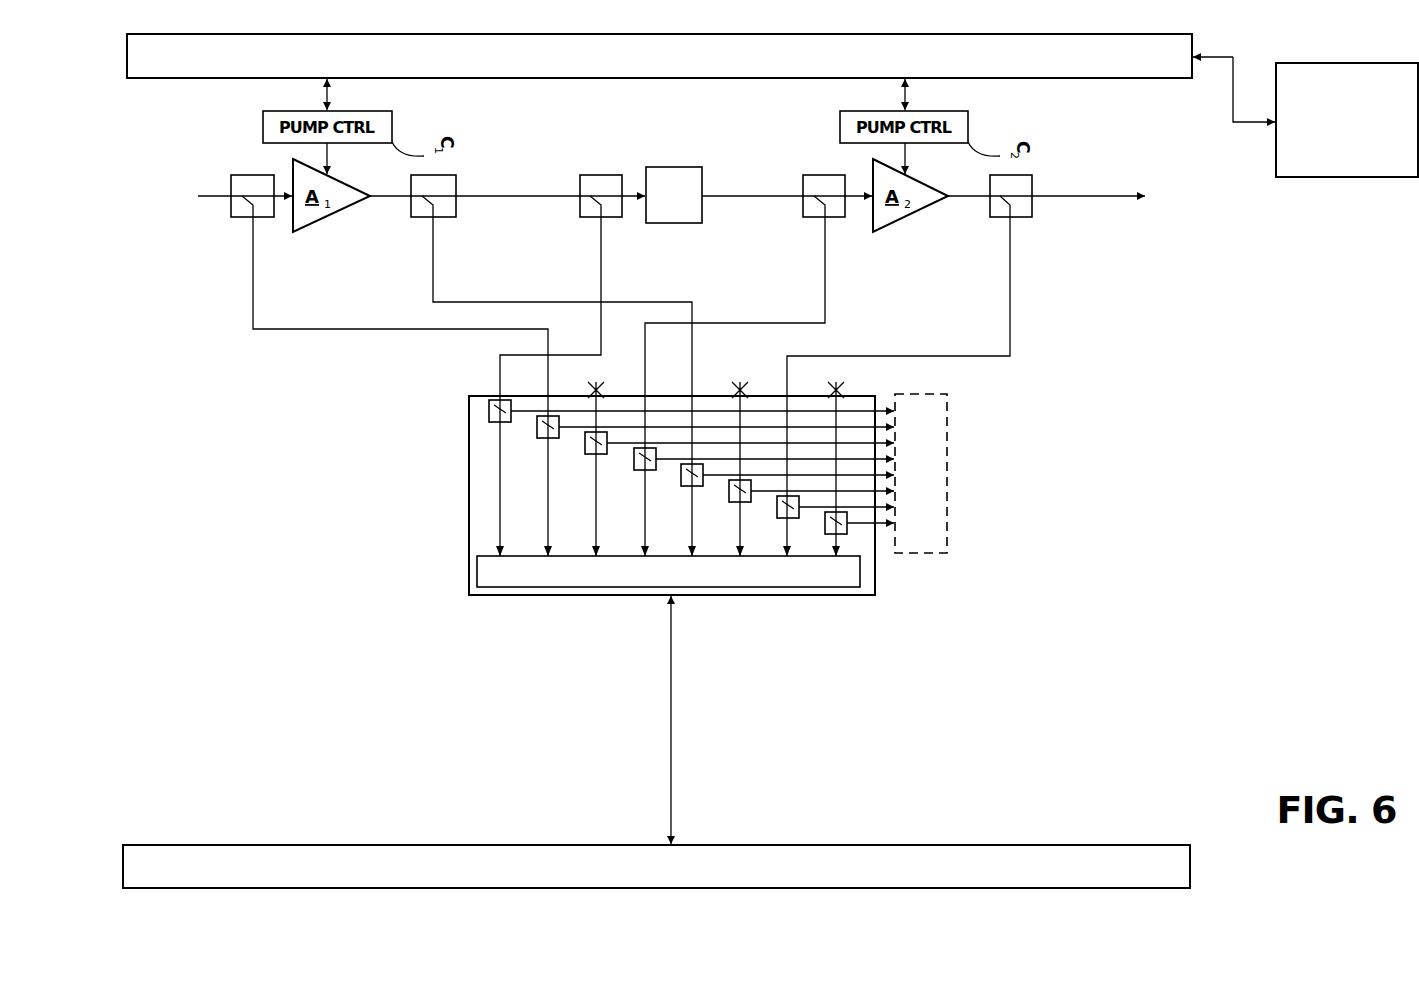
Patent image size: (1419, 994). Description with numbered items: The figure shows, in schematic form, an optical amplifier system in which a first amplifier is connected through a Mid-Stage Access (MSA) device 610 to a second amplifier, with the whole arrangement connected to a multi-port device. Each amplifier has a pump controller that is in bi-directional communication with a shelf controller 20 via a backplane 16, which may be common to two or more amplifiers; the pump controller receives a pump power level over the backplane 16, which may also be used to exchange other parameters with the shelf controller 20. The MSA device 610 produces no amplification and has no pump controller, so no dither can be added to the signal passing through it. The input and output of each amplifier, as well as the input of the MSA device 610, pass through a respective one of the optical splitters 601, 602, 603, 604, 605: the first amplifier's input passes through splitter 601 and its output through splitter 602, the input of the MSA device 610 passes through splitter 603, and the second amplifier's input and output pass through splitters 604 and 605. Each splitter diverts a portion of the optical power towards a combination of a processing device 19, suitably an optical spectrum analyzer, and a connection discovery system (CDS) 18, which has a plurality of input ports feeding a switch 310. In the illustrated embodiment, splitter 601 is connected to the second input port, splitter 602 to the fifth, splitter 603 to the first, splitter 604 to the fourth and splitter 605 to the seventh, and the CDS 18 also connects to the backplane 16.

The backplane 16 is at (657, 461).
The shelf controller 20 is at (1305, 117).
The connection discovery system 18 is at (648, 613).
The processing device 19 is at (921, 473).
The switch 310 is at (668, 571).
The optical splitter 601 is at (231, 209).
The optical splitter 602 is at (411, 209).
The optical splitter 603 is at (580, 209).
The optical splitter 604 is at (803, 209).
The optical splitter 605 is at (990, 209).
The Mid-Stage Access device 610 is at (674, 195).